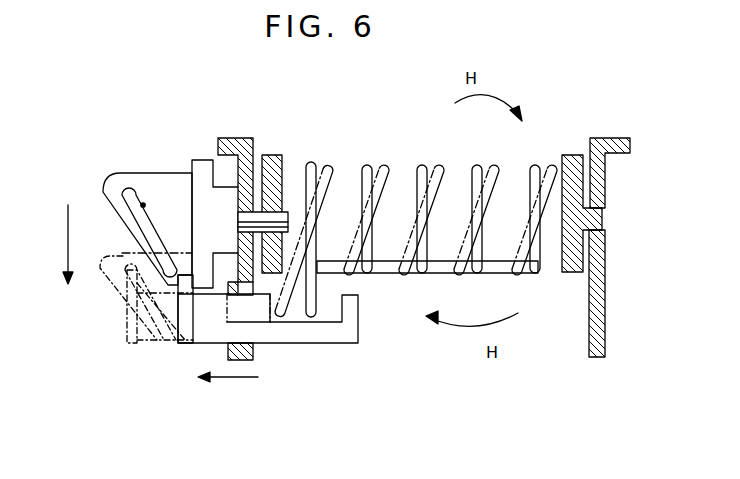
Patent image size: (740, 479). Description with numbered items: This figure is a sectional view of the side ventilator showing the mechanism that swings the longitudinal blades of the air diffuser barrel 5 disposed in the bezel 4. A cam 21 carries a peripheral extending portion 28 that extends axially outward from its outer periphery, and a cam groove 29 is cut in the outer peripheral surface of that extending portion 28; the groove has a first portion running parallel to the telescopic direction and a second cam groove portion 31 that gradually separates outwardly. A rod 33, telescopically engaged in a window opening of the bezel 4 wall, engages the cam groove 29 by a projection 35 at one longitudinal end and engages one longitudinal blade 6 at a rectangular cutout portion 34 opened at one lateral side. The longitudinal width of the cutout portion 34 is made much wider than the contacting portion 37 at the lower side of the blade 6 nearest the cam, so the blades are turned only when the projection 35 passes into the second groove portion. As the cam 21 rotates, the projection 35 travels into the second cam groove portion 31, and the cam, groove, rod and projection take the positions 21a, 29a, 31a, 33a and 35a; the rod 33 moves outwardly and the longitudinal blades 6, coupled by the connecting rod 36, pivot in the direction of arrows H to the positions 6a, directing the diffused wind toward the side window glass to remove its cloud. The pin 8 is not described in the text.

The bezel 4 is at (628, 150).
The air diffuser barrel 5 is at (573, 160).
The longitudinal blade 6 is at (533, 165).
The position of longitudinal blades 6a is at (325, 172).
The pin 8 is at (288, 212).
The cam 21 is at (131, 173).
The position of cam 21a is at (102, 282).
The peripheral extending portion 28 is at (143, 205).
The cam groove 29 is at (146, 192).
The position of cam groove 29a is at (153, 338).
The second cam groove portion 31 is at (120, 198).
The position of second cam groove portion 31a is at (133, 262).
The rod 33 is at (353, 328).
The position of rod 33a is at (153, 343).
The rectangular cutout portion 34 is at (292, 317).
The projection 35 is at (184, 288).
The position of projection 35a is at (126, 313).
The connecting rod 36 is at (497, 273).
The contacting portion 37 is at (314, 312).